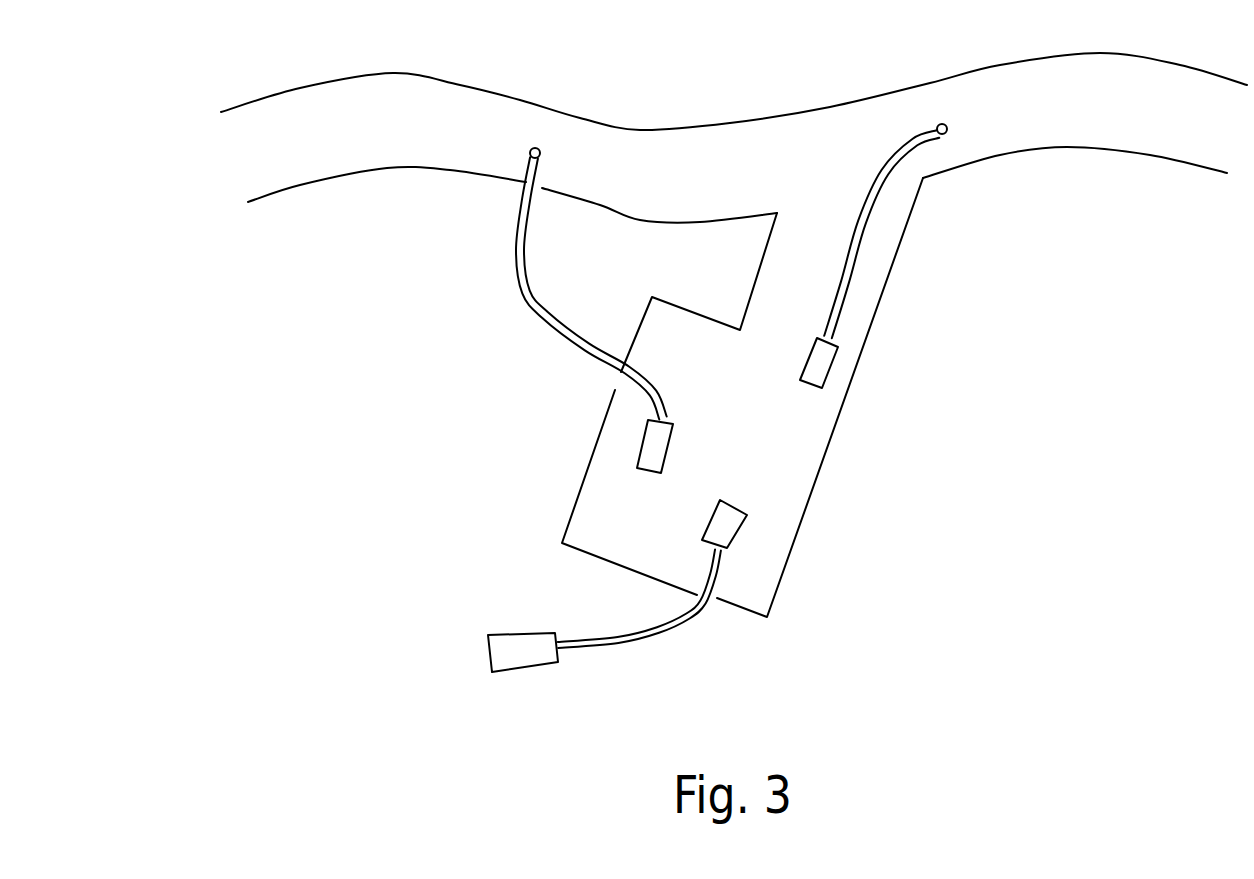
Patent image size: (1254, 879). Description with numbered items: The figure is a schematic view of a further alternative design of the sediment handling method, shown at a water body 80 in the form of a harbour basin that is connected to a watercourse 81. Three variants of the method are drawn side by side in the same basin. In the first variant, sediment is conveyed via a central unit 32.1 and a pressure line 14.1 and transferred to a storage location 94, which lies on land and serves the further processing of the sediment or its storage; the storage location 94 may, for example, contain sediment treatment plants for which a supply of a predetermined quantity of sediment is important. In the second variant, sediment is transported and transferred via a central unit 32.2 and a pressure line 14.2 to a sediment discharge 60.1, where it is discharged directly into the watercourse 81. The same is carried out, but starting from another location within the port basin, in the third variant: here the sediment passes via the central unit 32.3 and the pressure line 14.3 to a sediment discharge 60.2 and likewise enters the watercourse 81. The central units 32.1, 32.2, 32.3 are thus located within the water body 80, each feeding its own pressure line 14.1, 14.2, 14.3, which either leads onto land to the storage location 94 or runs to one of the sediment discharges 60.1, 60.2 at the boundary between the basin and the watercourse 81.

The water body 80 is at (742, 465).
The watercourse 81 is at (702, 190).
The sediment discharge 60.1 is at (530, 151).
The sediment discharge 60.2 is at (946, 125).
The pressure line 14.1 is at (660, 632).
The pressure line 14.2 is at (550, 333).
The pressure line 14.3 is at (875, 205).
The central unit 32.1 is at (730, 525).
The central unit 32.2 is at (652, 435).
The central unit 32.3 is at (818, 358).
The storage location 94 is at (512, 653).